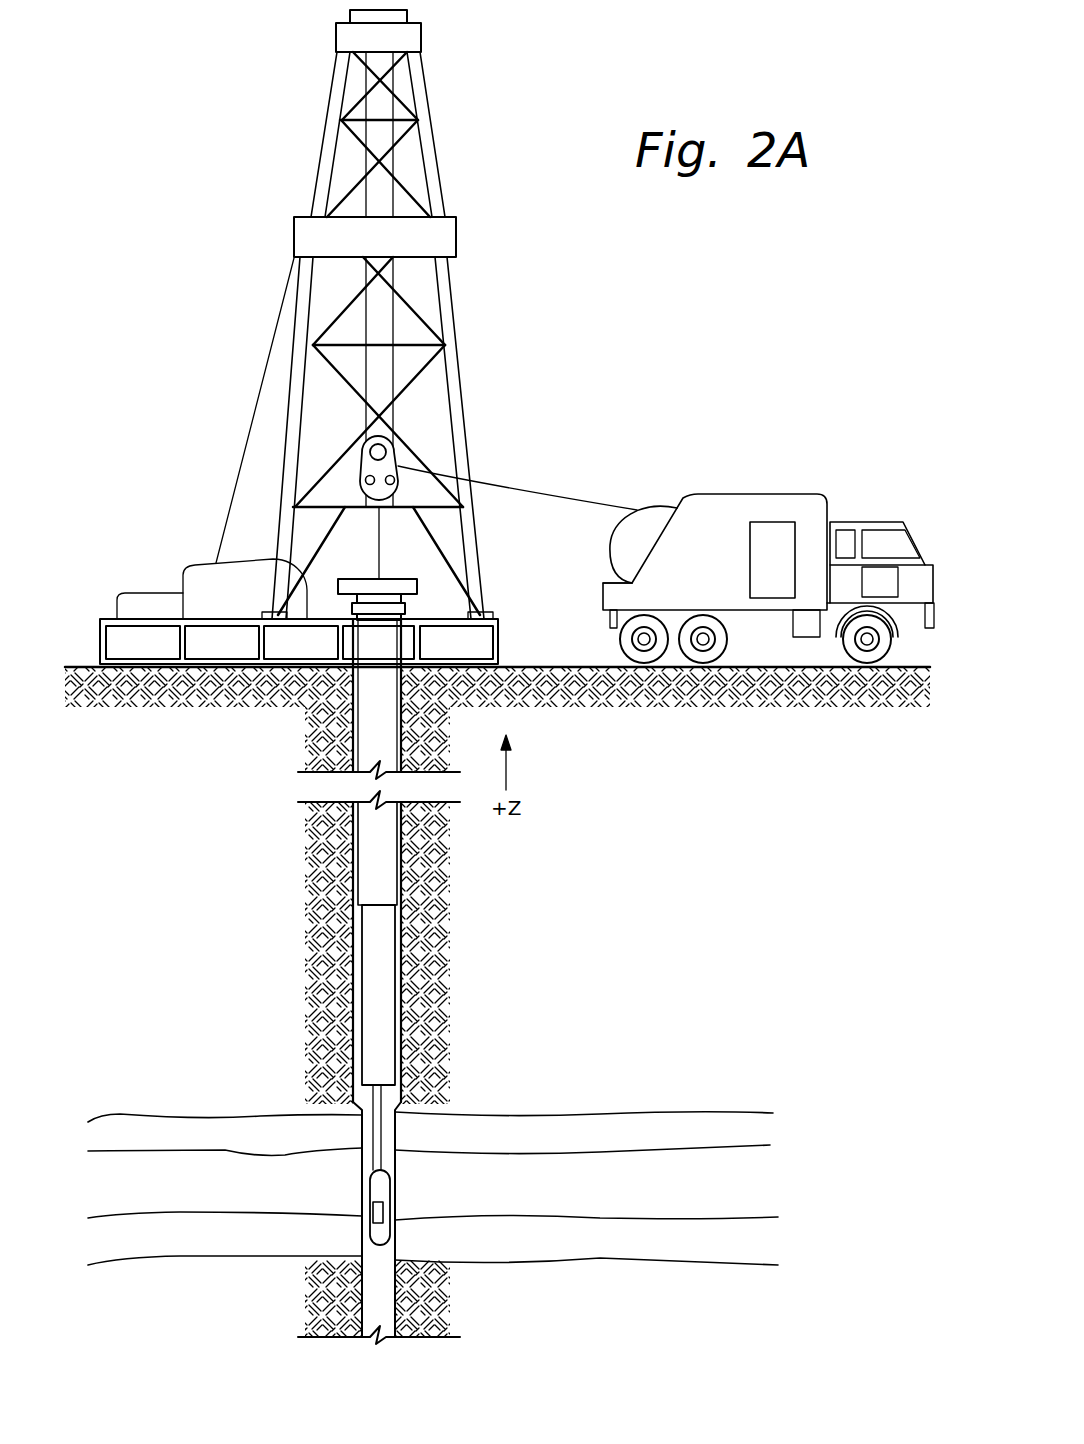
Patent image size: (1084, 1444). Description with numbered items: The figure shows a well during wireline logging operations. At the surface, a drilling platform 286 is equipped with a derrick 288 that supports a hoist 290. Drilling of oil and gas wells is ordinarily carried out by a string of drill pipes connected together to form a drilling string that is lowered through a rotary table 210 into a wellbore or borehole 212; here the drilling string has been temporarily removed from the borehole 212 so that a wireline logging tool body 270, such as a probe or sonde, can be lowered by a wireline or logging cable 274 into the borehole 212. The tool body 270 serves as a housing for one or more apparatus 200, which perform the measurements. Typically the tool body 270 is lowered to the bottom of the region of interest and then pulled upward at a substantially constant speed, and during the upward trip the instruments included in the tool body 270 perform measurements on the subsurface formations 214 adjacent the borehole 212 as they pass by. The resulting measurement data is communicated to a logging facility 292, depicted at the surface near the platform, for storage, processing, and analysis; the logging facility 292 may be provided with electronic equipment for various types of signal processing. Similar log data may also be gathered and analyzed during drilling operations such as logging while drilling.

The apparatus 200 is at (383, 1212).
The rotary table 210 is at (417, 587).
The borehole 212 is at (360, 1133).
The subsurface formations 214 is at (785, 1100).
The wireline logging tool body 270 is at (390, 1183).
The logging cable 274 is at (583, 500).
The drilling platform 286 is at (500, 637).
The derrick 288 is at (486, 601).
The hoist 290 is at (393, 458).
The logging facility 292 is at (727, 498).